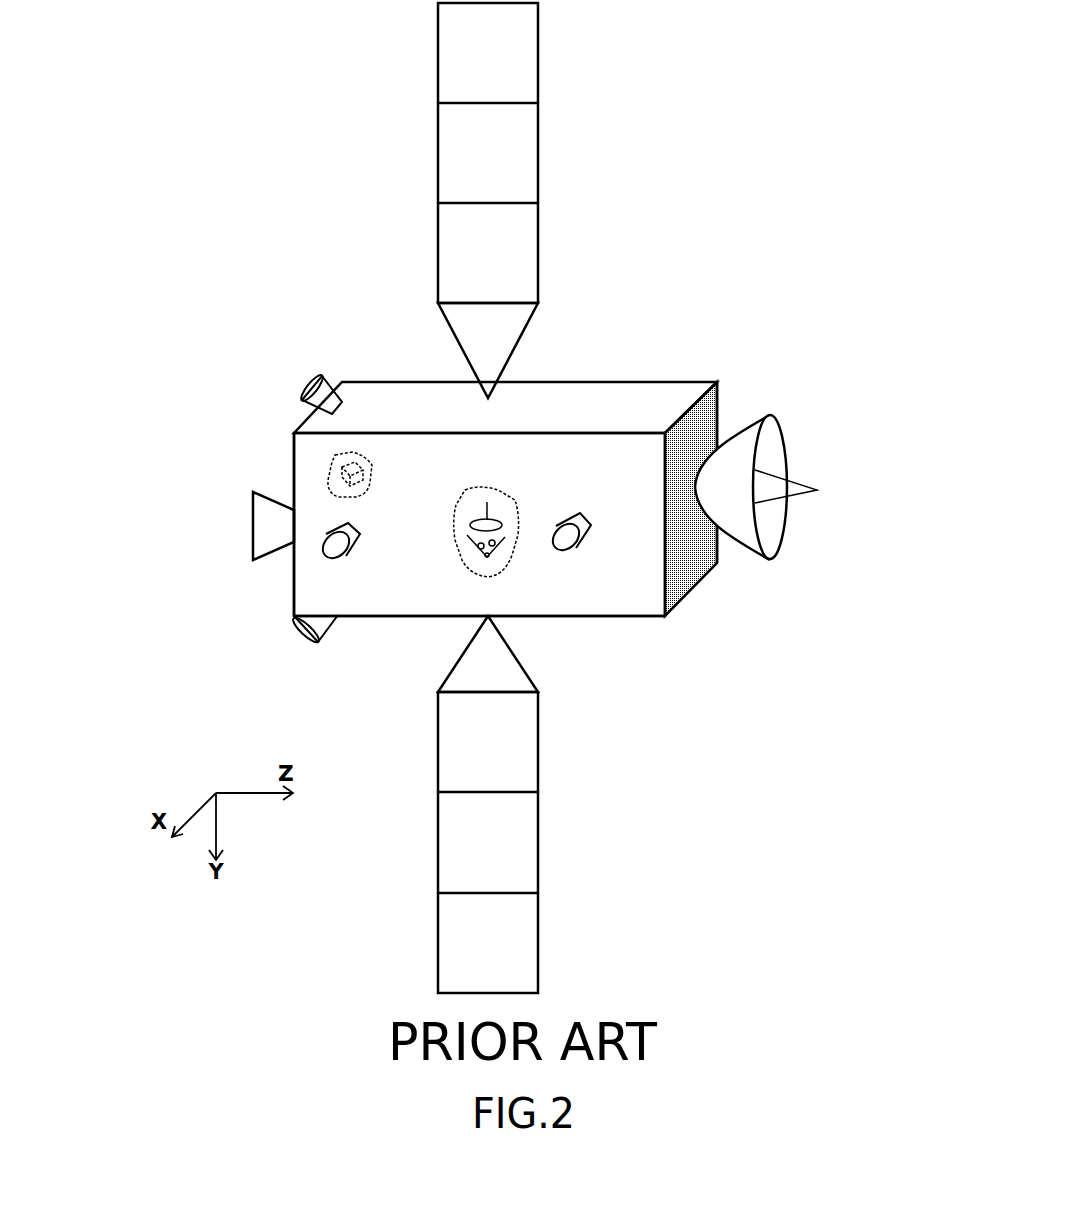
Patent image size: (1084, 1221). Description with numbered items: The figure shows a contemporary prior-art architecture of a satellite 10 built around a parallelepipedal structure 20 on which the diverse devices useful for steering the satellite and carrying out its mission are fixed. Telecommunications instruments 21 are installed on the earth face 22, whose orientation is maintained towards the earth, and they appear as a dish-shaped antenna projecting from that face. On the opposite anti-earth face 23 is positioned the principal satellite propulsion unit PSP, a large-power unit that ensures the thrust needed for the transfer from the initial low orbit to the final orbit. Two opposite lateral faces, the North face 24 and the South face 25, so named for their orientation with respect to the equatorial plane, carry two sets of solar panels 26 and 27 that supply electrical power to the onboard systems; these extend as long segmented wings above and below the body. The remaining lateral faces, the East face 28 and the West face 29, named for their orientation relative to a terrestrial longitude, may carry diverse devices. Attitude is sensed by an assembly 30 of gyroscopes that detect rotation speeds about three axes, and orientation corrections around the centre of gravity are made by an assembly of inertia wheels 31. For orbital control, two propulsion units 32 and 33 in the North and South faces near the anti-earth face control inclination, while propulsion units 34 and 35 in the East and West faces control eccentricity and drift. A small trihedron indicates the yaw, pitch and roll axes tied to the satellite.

The satellite 10 is at (698, 224).
The parallelepipedal structure 20 is at (503, 497).
The telecommunications instruments 21 is at (765, 452).
The earth face 22 is at (687, 567).
The anti-earth face 23 is at (293, 467).
The North face 24 is at (569, 398).
The South face 25 is at (580, 617).
The solar panels 26 is at (520, 153).
The solar panels 27 is at (515, 838).
The East face 28 is at (430, 595).
The West face 29 is at (720, 412).
The assembly of gyroscopes 30 is at (370, 483).
The assembly of inertia wheels 31 is at (507, 508).
The propulsion unit 32 is at (312, 382).
The propulsion unit 33 is at (308, 623).
The propulsion unit 34 is at (330, 543).
The propulsion unit 35 is at (563, 540).
The principal satellite propulsion unit PSP is at (257, 522).